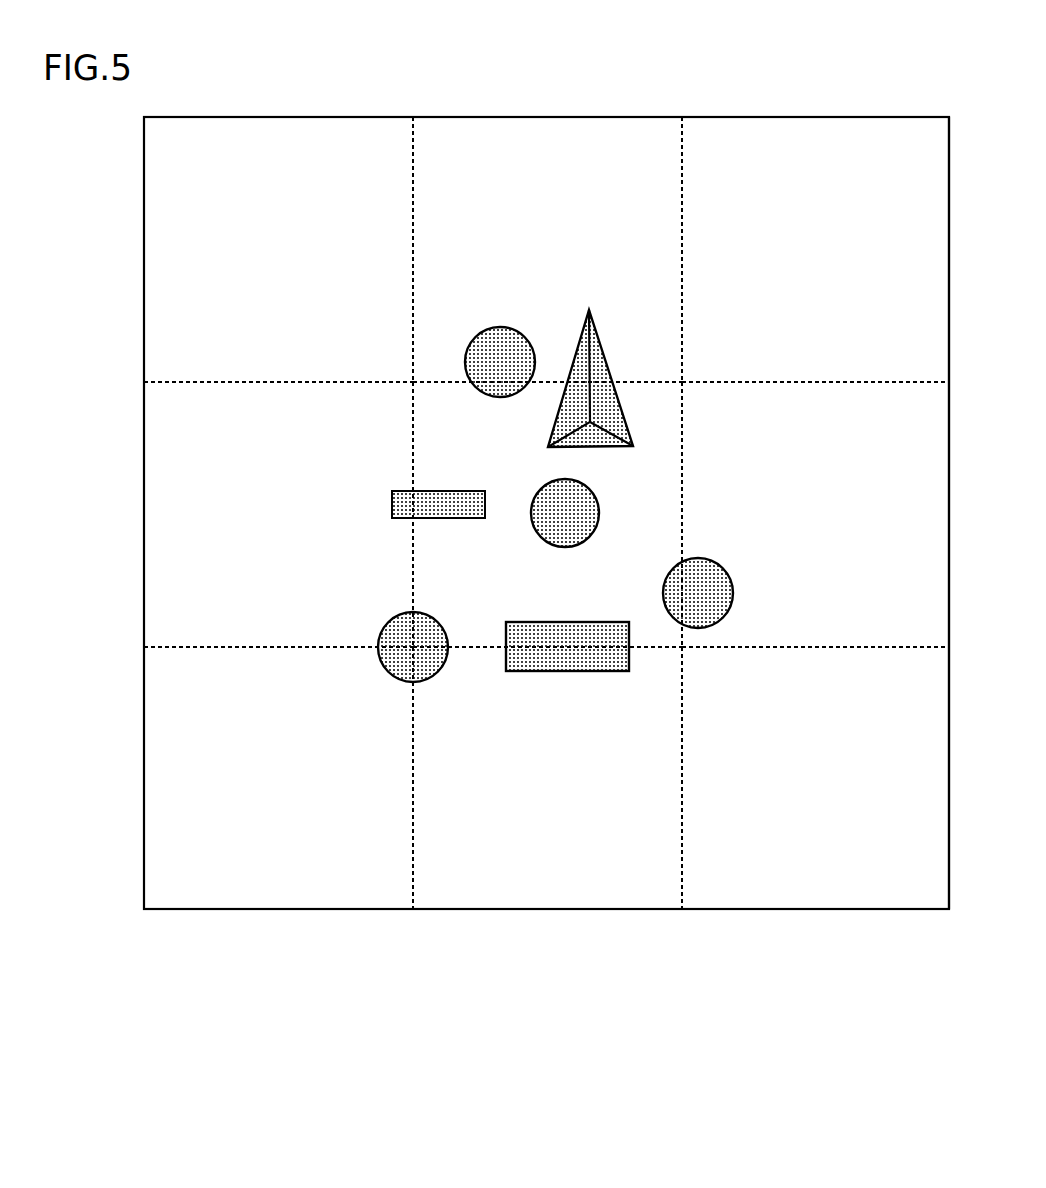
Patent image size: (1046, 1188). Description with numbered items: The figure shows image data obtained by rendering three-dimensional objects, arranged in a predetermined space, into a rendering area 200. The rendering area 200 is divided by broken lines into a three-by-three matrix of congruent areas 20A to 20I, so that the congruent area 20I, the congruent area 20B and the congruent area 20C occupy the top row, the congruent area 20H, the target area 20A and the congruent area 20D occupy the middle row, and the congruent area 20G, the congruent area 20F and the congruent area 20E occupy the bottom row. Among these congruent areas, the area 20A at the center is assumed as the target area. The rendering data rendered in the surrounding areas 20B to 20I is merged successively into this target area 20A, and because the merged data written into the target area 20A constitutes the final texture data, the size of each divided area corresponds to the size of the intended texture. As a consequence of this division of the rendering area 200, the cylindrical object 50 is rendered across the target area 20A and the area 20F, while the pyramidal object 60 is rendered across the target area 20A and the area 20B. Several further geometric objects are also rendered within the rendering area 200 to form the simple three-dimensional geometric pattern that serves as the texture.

The rendering area 200 is at (576, 1014).
The target area 20A is at (547, 514).
The congruent area 20B is at (547, 249).
The congruent area 20C is at (815, 249).
The congruent area 20D is at (815, 514).
The congruent area 20E is at (815, 778).
The congruent area 20F is at (547, 778).
The congruent area 20G is at (278, 778).
The congruent area 20H is at (278, 514).
The congruent area 20I is at (278, 249).
The cylindrical object 50 is at (602, 672).
The pyramidal object 60 is at (603, 344).